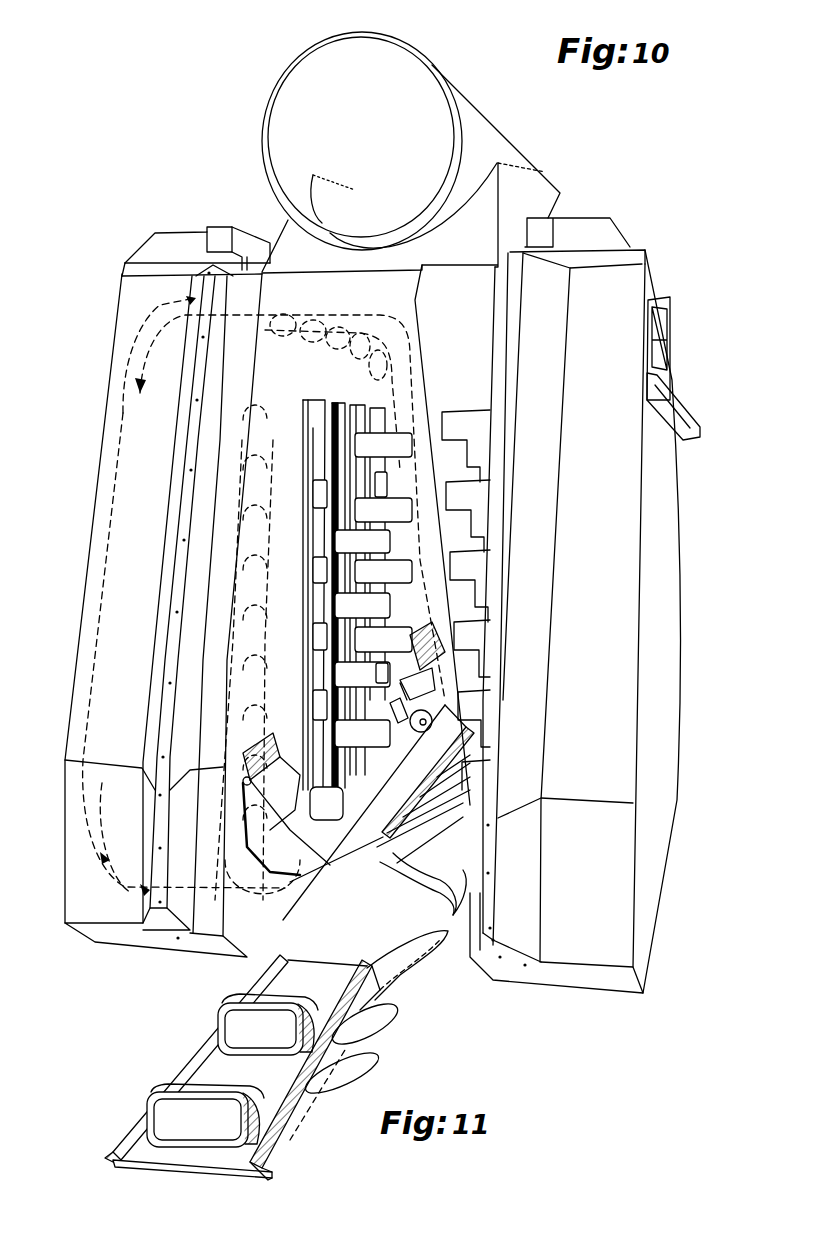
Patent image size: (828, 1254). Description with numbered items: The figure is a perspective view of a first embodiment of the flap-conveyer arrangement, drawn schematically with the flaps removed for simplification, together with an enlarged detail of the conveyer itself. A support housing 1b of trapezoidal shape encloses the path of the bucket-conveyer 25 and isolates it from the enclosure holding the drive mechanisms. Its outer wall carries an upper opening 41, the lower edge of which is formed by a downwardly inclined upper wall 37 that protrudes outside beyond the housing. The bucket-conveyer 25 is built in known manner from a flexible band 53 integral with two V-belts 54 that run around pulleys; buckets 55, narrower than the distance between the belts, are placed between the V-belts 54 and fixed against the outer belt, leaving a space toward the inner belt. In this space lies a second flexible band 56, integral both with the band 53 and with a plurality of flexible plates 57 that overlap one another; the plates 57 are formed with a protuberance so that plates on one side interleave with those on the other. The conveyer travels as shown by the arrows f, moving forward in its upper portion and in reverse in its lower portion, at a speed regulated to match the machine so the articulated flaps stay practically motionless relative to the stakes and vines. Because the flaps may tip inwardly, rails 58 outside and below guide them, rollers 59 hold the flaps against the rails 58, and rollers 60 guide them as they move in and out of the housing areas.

In FIG. 10, the support housing 1b is at (652, 292).
In FIG. 10, the upper opening 41 is at (660, 367).
In FIG. 10, the upper wall 37 is at (690, 424).
In FIG. 10, the rollers 60 is at (432, 655).
In FIG. 10, the rollers 59 is at (468, 730).
In FIG. 10, the flexible plates 57 is at (440, 857).
In FIG. 11, the flexible plates 57 is at (370, 1062).
In FIG. 10, the bucket-conveyer 25 is at (378, 852).
In FIG. 11, the bucket-conveyer 25 is at (182, 1066).
In FIG. 10, the rails 58 is at (265, 845).
In FIG. 10, the arrows f is at (100, 856).
In FIG. 11, the flexible band 53 is at (195, 1173).
In FIG. 11, the V-belts 54 is at (118, 1155).
In FIG. 11, the buckets 55 is at (165, 1113).
In FIG. 11, the flexible band 56 is at (247, 1173).